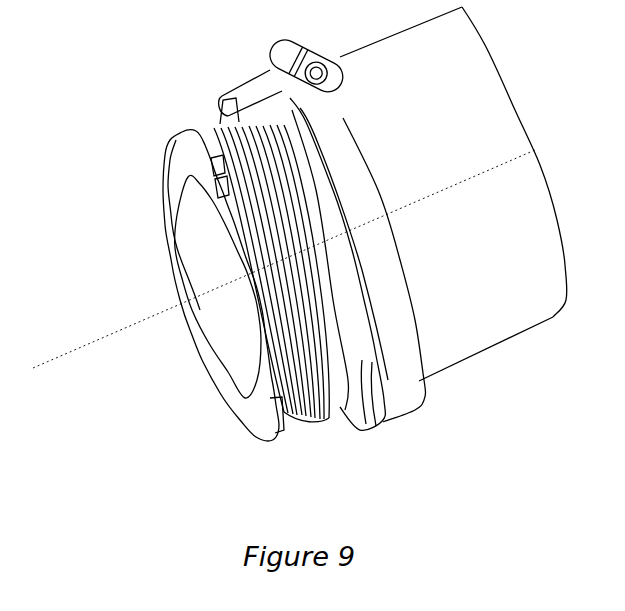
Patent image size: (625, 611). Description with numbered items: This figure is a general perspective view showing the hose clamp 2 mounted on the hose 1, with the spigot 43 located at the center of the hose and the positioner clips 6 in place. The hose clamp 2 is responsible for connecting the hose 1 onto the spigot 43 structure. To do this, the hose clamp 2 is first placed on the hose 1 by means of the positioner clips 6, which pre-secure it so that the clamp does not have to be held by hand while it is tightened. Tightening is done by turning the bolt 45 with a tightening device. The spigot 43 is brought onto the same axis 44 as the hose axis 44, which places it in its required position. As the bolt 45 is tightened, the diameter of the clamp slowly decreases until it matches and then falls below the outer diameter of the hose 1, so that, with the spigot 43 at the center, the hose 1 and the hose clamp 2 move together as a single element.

The hose 1 is at (517, 84).
The hose clamp 2 is at (393, 192).
The positioner clips 6 is at (333, 253).
The spigot 43 is at (166, 139).
The axis 44 is at (124, 327).
The bolt 45 is at (333, 117).